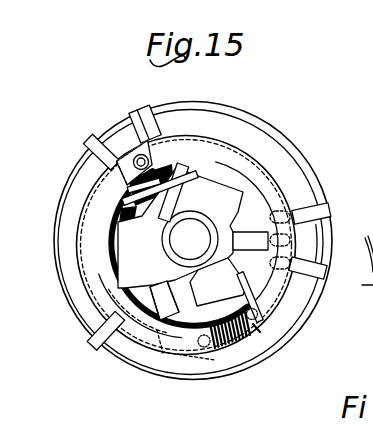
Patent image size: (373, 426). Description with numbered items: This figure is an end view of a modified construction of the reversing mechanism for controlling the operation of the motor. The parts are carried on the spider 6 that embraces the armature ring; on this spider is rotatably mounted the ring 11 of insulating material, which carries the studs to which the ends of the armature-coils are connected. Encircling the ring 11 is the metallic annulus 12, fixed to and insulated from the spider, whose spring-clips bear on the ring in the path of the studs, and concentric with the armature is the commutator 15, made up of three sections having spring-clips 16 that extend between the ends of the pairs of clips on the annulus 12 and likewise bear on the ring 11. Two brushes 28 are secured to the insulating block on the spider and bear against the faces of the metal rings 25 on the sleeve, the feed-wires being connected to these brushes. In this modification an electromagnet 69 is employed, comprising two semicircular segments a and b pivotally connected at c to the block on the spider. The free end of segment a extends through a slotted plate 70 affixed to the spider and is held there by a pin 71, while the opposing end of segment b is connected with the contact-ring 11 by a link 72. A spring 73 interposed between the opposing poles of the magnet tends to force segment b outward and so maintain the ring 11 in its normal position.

The metallic annulus 12 is at (273, 133).
The commutator 15 is at (90, 143).
The pivot c is at (128, 128).
The semicircular segment a is at (247, 237).
The spider 6 is at (180, 228).
The spring-clips 16 is at (250, 238).
The brushes 28 is at (158, 212).
The semicircular segment b is at (100, 248).
The ring 11 is at (117, 287).
The metal rings 25 is at (218, 282).
The pin 71 is at (266, 316).
The slotted plate 70 is at (262, 330).
The link 72 is at (264, 340).
The spring 73 is at (240, 345).
The electromagnet 69 is at (193, 347).